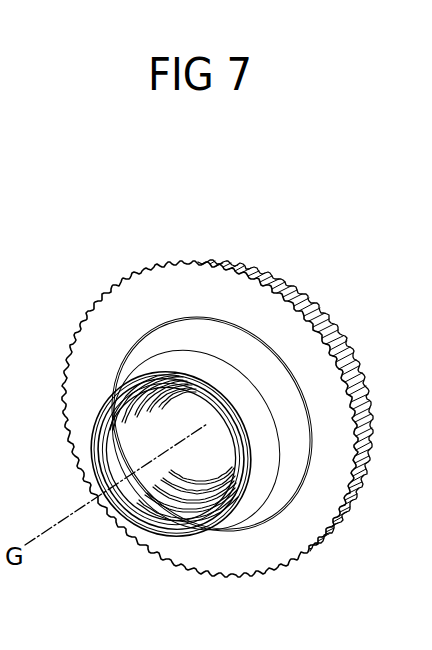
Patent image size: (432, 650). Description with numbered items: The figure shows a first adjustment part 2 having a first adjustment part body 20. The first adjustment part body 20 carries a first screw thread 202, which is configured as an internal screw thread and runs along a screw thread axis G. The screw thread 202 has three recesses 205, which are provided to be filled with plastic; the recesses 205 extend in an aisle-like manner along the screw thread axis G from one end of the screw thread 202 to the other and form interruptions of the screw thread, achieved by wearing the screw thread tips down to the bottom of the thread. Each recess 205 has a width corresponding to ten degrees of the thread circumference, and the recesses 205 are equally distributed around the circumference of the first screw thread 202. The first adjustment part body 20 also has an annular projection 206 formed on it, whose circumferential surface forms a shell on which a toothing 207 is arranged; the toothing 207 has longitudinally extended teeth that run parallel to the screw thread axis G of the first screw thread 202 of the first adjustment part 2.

The first adjustment part 2 is at (243, 384).
The first adjustment part body 20 is at (262, 448).
The first screw thread 202 is at (190, 467).
The recesses 205 is at (140, 470).
The annular projection 206 is at (143, 303).
The toothing 207 is at (312, 312).